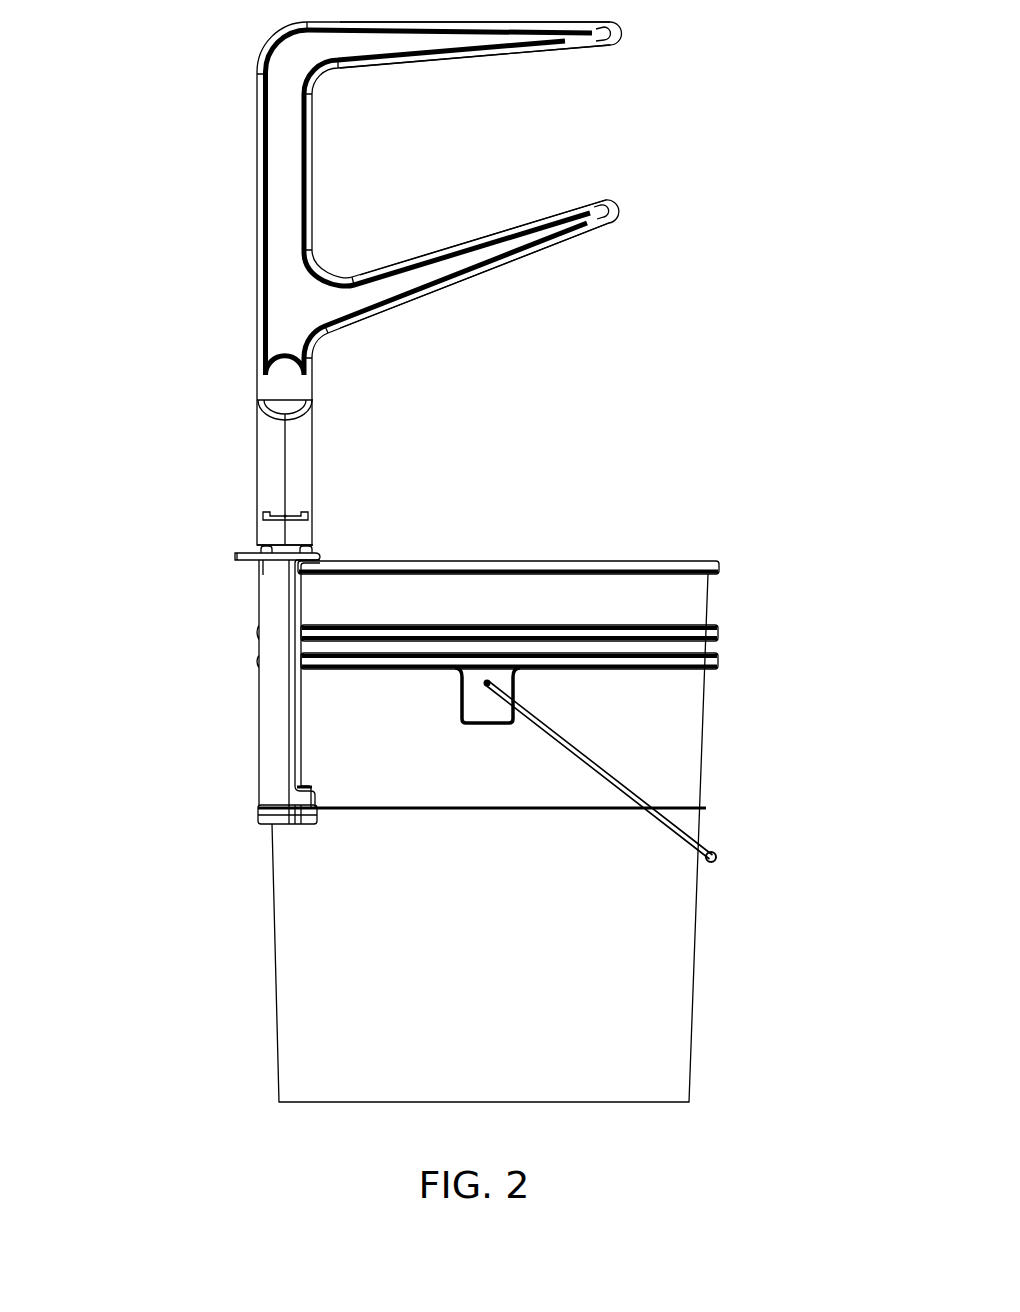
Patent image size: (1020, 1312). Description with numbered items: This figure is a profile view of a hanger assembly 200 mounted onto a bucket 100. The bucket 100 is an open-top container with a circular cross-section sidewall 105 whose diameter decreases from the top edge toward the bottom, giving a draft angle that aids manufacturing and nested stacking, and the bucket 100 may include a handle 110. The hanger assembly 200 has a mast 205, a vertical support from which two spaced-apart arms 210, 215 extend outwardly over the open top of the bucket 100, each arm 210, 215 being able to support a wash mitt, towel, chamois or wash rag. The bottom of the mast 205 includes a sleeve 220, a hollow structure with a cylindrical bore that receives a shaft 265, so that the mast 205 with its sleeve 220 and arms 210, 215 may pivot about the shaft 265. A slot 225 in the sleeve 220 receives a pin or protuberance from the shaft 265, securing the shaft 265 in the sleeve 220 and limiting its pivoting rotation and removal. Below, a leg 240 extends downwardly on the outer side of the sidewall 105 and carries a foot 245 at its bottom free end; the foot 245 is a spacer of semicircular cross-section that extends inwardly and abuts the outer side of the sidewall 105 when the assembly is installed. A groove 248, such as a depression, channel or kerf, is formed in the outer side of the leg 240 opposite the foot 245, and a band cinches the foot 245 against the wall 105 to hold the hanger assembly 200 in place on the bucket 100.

The bucket 100 is at (217, 890).
The sidewall 105 is at (697, 978).
The handle 110 is at (717, 855).
The hanger assembly 200 is at (215, 192).
The mast 205 is at (310, 176).
The arm 210 is at (535, 57).
The arm 215 is at (556, 249).
The sleeve 220 is at (315, 477).
The slot 225 is at (284, 514).
The leg 240 is at (275, 655).
The foot 245 is at (311, 797).
The groove 248 is at (257, 808).
The shaft 265 is at (350, 813).